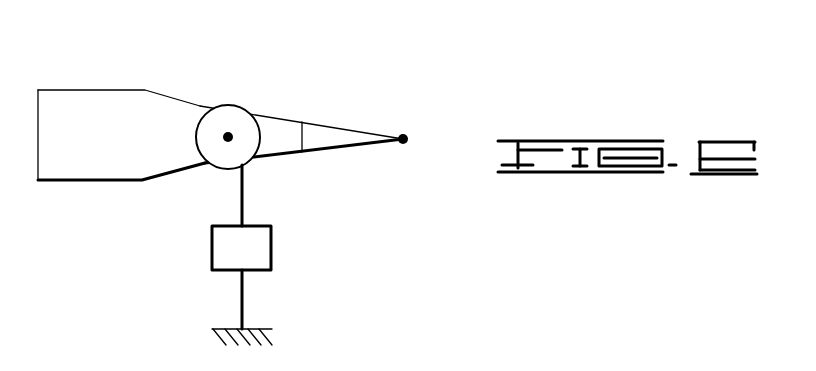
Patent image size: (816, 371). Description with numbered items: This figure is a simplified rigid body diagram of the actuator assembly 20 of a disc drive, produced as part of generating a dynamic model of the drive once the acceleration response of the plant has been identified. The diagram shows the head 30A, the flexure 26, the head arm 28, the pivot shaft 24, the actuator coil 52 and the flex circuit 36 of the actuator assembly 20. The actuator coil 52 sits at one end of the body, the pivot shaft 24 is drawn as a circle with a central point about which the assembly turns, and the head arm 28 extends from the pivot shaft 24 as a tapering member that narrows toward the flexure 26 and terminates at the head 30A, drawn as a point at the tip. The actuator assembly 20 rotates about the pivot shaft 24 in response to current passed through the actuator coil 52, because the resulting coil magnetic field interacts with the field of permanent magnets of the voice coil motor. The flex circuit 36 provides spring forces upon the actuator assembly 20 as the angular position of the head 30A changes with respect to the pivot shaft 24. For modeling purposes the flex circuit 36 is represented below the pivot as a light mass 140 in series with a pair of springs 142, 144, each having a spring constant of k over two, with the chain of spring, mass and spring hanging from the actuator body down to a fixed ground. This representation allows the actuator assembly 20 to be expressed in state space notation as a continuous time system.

The actuator assembly 20 is at (261, 113).
The pivot shaft 24 is at (224, 125).
The flexure 26 is at (333, 128).
The head arm 28 is at (273, 125).
The head 30A is at (406, 134).
The actuator coil 52 is at (113, 167).
The flex circuit 36 is at (267, 255).
The light mass 140 is at (212, 250).
The spring 142 is at (242, 190).
The spring 144 is at (240, 307).